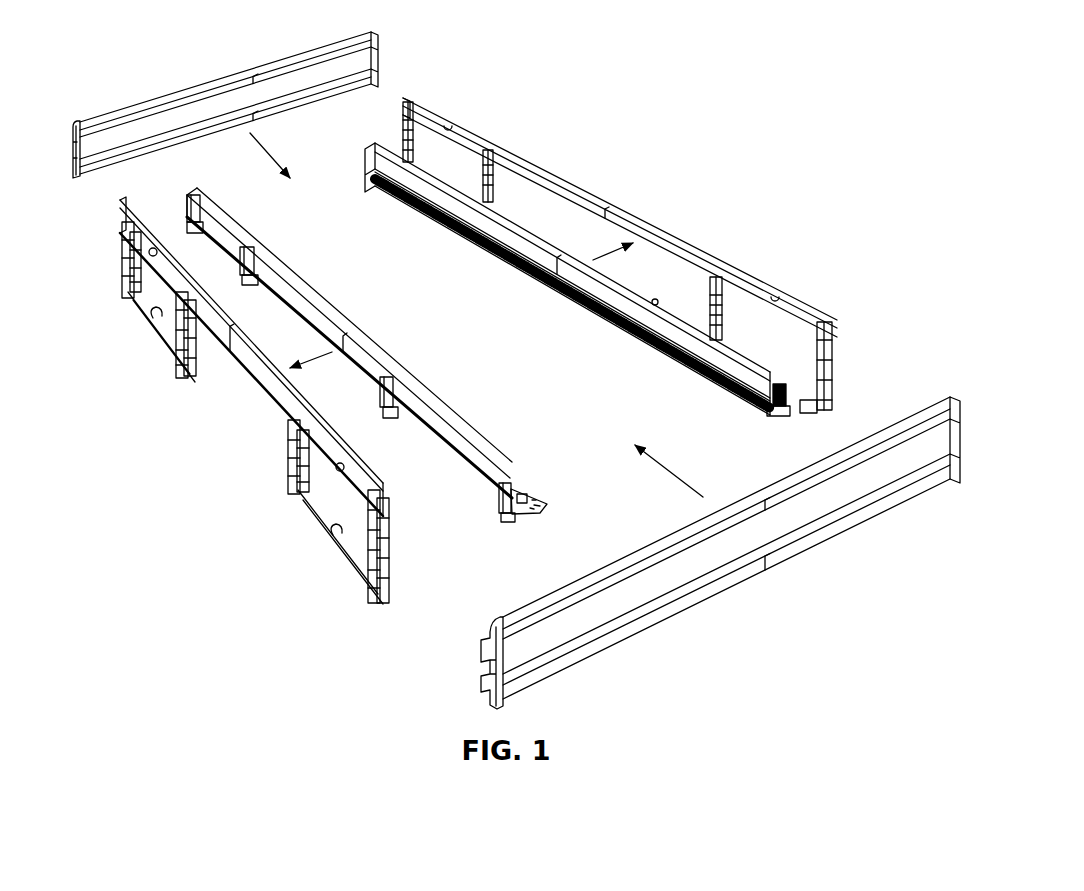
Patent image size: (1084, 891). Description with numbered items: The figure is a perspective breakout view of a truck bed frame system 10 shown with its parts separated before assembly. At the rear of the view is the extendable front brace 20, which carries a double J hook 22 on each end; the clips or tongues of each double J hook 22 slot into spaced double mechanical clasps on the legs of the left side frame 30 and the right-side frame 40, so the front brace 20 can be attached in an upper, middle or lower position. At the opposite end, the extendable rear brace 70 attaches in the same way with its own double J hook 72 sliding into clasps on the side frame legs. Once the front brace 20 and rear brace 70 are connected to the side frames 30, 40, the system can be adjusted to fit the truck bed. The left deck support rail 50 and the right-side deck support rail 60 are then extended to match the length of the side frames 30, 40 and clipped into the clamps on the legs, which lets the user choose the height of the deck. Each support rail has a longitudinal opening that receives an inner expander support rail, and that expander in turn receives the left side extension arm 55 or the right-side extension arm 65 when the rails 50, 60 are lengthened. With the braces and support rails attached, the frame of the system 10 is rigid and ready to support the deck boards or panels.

The truck bed frame system 10 is at (778, 124).
The front brace 20 is at (197, 86).
The double J hook 22 is at (79, 124).
The left side frame 30 is at (124, 271).
The right-side frame 40 is at (679, 239).
The left deck support rail 50 is at (463, 441).
The left side extension arm 55 is at (529, 490).
The right-side deck support rail 60 is at (429, 176).
The right-side extension arm 65 is at (781, 388).
The rear brace 70 is at (613, 564).
The double J hook 72 is at (490, 620).